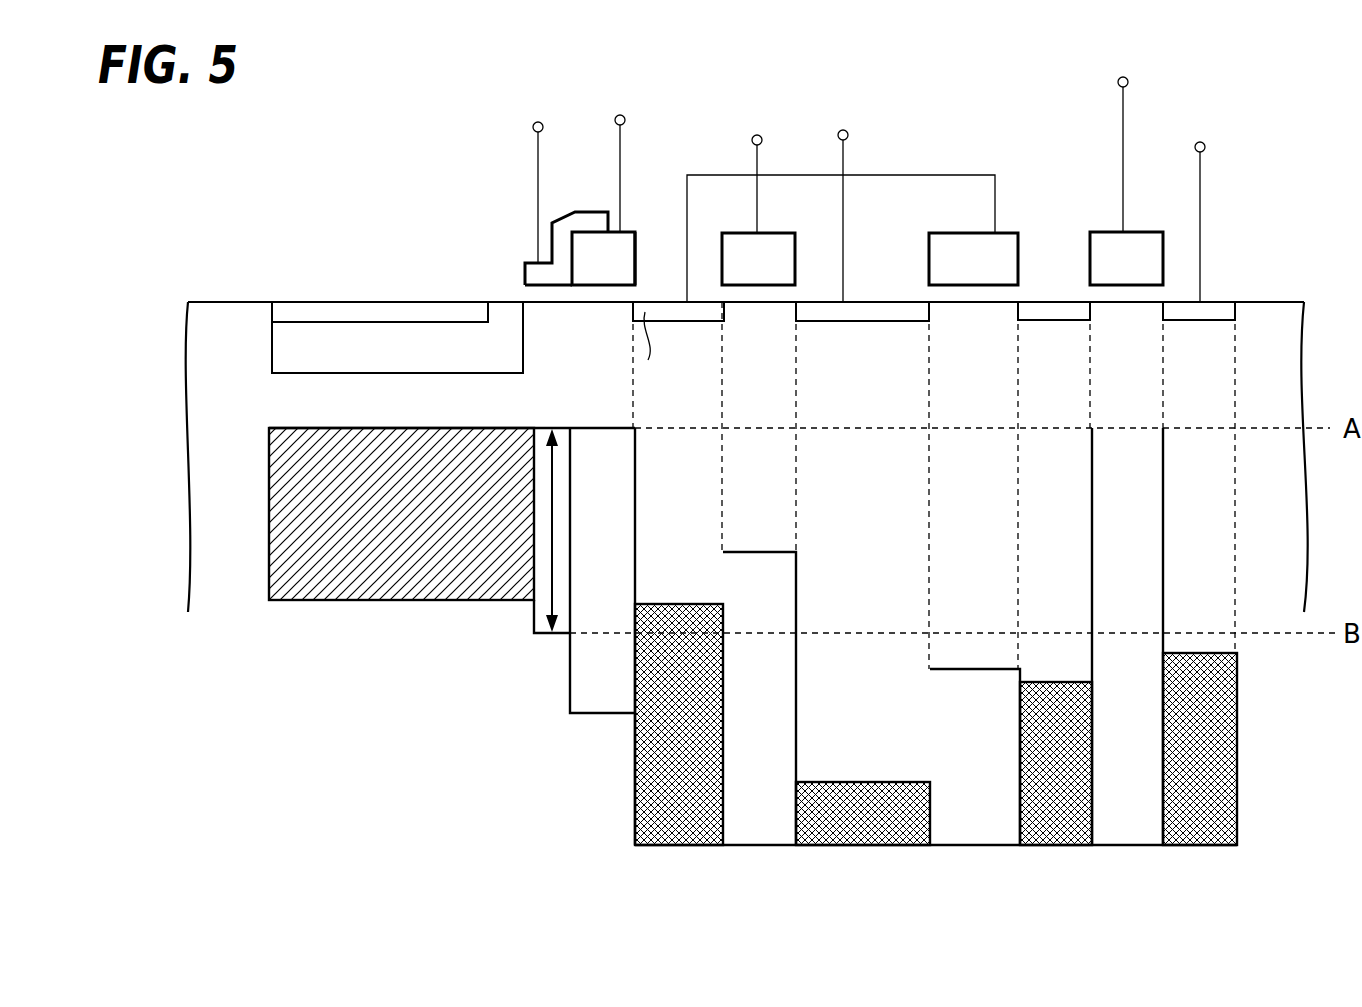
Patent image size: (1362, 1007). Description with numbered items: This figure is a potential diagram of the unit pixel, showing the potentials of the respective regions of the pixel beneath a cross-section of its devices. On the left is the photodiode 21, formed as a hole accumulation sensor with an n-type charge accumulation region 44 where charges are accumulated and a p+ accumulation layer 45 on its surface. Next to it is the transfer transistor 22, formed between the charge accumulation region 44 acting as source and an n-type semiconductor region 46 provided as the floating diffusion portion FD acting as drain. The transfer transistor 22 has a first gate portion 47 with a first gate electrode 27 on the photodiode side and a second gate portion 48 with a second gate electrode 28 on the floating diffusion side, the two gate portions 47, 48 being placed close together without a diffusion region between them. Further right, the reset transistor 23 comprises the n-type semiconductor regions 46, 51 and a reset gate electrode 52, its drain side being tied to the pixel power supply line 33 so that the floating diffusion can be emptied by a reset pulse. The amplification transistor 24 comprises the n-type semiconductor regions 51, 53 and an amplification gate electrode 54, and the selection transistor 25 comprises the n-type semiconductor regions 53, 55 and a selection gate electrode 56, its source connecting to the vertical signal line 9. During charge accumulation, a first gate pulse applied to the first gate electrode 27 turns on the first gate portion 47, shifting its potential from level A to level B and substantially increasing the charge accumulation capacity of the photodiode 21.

The vertical signal line 9 is at (1200, 141).
The photodiode 21 is at (364, 299).
The transfer transistor 22 is at (567, 184).
The reset transistor 23 is at (744, 193).
The amplification transistor 24 is at (981, 191).
The selection transistor 25 is at (1119, 164).
The first gate electrode 27 is at (530, 228).
The second gate electrode 28 is at (627, 206).
The pixel power supply line 33 is at (843, 129).
The n-type charge accumulation region 44 is at (295, 351).
The p+ accumulation layer 45 is at (322, 312).
The n-type semiconductor region 46 is at (703, 312).
The first gate portion 47 is at (521, 274).
The second gate portion 48 is at (639, 251).
The n-type semiconductor region 51 is at (827, 312).
The reset gate electrode 52 is at (778, 240).
The n-type semiconductor region 53 is at (1038, 317).
The amplification gate electrode 54 is at (1007, 237).
The n-type semiconductor region 55 is at (1180, 313).
The selection gate electrode 56 is at (1138, 238).